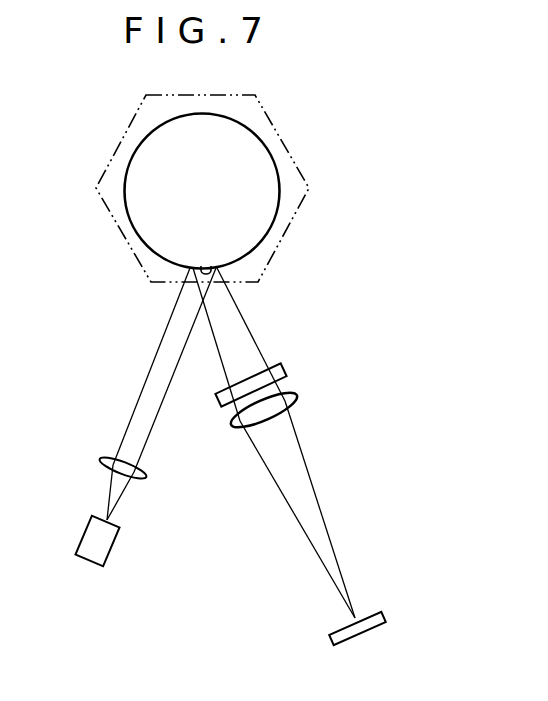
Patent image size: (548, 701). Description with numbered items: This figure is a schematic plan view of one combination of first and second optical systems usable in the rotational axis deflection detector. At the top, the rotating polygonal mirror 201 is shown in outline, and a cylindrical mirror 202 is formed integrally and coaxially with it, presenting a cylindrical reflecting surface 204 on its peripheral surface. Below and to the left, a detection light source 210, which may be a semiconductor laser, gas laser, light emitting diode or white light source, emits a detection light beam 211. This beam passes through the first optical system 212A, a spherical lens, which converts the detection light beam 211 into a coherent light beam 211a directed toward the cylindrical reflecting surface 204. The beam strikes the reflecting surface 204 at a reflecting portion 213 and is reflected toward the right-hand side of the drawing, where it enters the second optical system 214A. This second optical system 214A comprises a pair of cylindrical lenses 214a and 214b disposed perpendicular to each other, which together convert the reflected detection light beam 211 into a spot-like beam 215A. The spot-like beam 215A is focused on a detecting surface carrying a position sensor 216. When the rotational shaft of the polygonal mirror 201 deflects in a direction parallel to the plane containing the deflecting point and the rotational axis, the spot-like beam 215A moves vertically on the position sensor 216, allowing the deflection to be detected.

The rotating polygonal mirror 201 is at (274, 122).
The cylindrical mirror 202 is at (266, 191).
The cylindrical reflecting surface 204 is at (271, 158).
The reflecting portion 213 is at (202, 266).
The detection light source 210 is at (84, 535).
The detection light beam 211 is at (110, 478).
The coherent light beam 211a is at (148, 378).
The first optical system 212A is at (110, 457).
The second optical system 214A is at (342, 389).
The cylindrical lens 214a is at (288, 369).
The cylindrical lens 214b is at (296, 399).
The spot-like beam 215A is at (360, 617).
The position sensor 216 is at (370, 638).